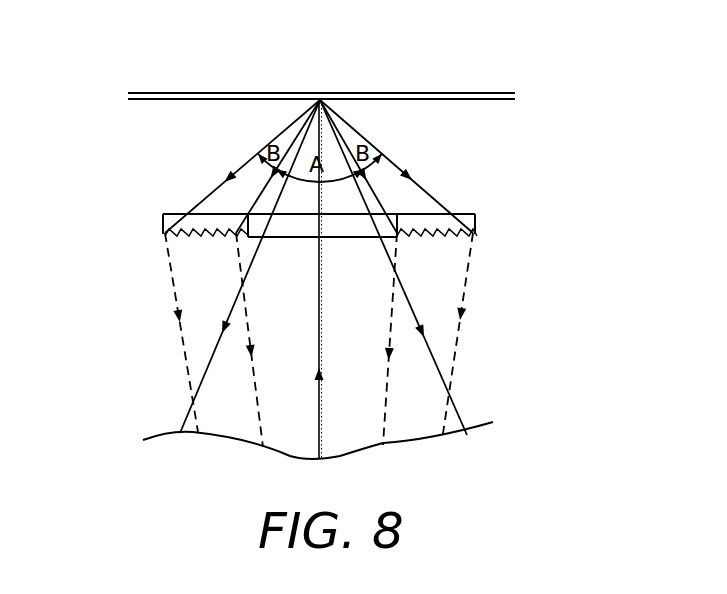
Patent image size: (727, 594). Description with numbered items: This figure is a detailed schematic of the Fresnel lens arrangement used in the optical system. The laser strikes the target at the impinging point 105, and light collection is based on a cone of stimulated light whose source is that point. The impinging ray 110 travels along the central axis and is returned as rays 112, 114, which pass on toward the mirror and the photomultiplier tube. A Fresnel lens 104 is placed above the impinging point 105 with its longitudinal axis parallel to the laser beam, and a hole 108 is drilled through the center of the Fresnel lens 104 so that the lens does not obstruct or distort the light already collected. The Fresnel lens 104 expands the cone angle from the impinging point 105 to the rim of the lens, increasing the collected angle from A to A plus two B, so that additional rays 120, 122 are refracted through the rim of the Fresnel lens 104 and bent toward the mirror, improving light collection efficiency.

The Fresnel lens 104 is at (477, 214).
The impinging point 105 is at (322, 97).
The hole 108 is at (372, 238).
The impinging ray 110 is at (319, 335).
The ray 112 is at (182, 417).
The ray 114 is at (458, 404).
The additional ray 120 is at (177, 293).
The additional ray 122 is at (385, 420).